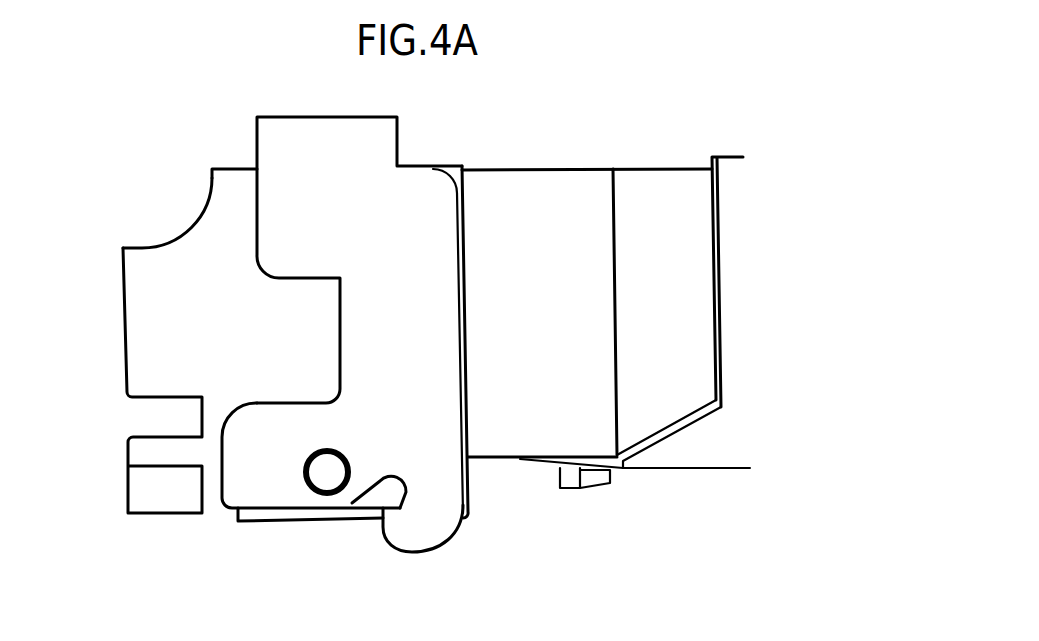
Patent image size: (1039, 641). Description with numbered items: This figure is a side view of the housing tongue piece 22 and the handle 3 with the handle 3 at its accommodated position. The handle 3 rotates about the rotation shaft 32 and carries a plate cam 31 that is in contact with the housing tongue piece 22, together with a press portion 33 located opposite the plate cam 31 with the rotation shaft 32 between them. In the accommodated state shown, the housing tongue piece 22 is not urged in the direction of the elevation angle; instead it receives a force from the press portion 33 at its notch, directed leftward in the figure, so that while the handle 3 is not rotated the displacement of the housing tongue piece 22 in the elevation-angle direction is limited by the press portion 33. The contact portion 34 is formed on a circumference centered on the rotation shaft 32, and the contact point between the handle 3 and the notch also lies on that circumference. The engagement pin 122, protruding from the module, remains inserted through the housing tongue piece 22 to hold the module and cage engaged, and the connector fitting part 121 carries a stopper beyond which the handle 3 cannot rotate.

The handle 3 is at (378, 145).
The connector fitting part 121 is at (160, 312).
The engagement pin 122 is at (570, 492).
The housing tongue piece 22 is at (265, 522).
The plate cam 31 is at (230, 486).
The rotation shaft 32 is at (343, 457).
The press portion 33 is at (420, 535).
The contact portion 34 is at (383, 522).